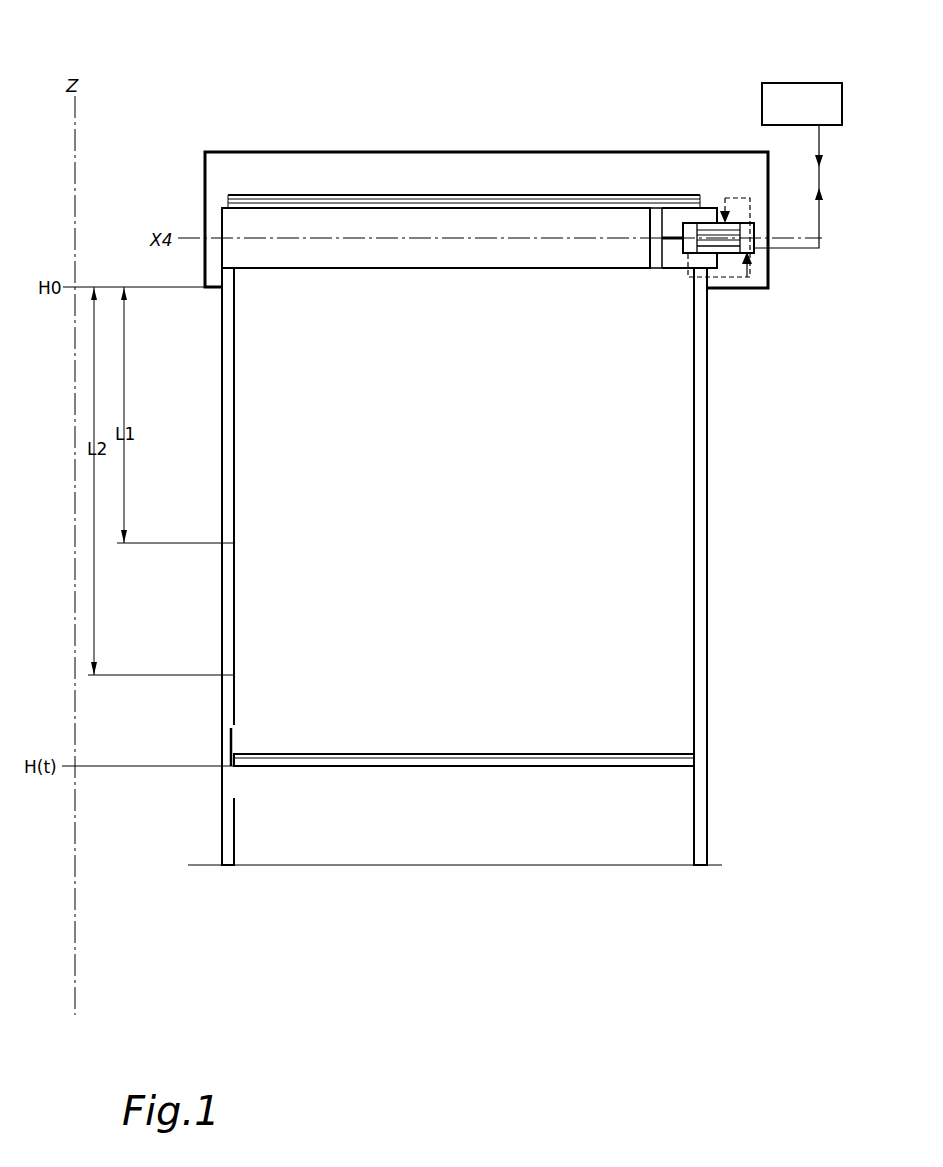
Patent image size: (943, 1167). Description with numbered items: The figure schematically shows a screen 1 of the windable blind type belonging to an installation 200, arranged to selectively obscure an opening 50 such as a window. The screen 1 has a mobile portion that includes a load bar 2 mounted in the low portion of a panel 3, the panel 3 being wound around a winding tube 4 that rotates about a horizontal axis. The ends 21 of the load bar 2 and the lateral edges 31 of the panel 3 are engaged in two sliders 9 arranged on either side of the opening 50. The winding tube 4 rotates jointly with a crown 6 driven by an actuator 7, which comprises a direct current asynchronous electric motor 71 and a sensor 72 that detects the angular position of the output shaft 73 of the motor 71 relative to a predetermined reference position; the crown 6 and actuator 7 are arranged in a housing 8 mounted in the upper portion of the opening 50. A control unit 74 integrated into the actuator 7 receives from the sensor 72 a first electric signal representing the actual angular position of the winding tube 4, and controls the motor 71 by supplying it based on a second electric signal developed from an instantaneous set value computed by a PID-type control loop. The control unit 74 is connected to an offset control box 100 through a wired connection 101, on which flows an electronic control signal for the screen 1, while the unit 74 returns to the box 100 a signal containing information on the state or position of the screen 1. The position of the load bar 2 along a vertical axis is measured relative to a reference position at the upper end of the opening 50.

The installation 200 is at (522, 108).
The screen 1 is at (203, 362).
The housing 8 is at (288, 152).
The winding tube 4 is at (363, 270).
The crown 6 is at (656, 268).
The output shaft 73 is at (667, 233).
The actuator 7 is at (709, 212).
The sensor 72 is at (691, 228).
The electric motor 71 is at (705, 222).
The control unit 74 is at (756, 240).
The control box 100 is at (802, 104).
The wired connection 101 is at (822, 248).
The sliders 9 is at (222, 640).
The panel 3 is at (464, 511).
The lateral edges 31 is at (236, 745).
The ends 21 is at (226, 760).
The load bar 2 is at (374, 768).
The opening 50 is at (464, 815).